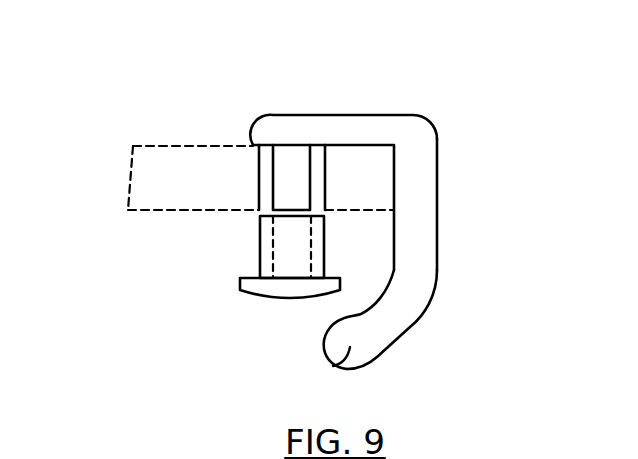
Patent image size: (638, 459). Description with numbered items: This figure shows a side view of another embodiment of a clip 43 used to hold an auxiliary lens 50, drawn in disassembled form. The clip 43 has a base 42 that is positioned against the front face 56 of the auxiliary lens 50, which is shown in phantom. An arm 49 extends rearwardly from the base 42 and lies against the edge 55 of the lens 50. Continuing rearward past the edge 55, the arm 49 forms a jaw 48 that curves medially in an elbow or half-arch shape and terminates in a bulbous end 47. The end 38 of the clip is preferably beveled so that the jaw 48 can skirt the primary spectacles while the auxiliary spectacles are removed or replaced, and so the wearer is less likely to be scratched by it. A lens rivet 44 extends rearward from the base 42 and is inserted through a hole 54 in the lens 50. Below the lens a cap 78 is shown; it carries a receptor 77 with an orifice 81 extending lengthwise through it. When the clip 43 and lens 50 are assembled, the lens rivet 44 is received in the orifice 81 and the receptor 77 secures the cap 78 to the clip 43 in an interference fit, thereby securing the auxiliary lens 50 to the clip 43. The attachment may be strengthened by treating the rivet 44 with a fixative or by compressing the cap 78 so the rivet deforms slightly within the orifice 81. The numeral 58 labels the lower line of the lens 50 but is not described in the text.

The end 38 is at (330, 333).
The base 42 is at (332, 125).
The clip 43 is at (423, 97).
The lens rivet 44 is at (297, 157).
The bulbous end 47 is at (337, 367).
The jaw 48 is at (405, 323).
The arm 49 is at (422, 280).
The auxiliary lens 50 is at (211, 190).
The hole 54 is at (318, 190).
The edge 55 is at (394, 177).
The front face 56 is at (173, 145).
The lower surface of rail 58 is at (166, 211).
The receptor 77 is at (261, 230).
The cap 78 is at (240, 292).
The orifice 81 is at (298, 268).